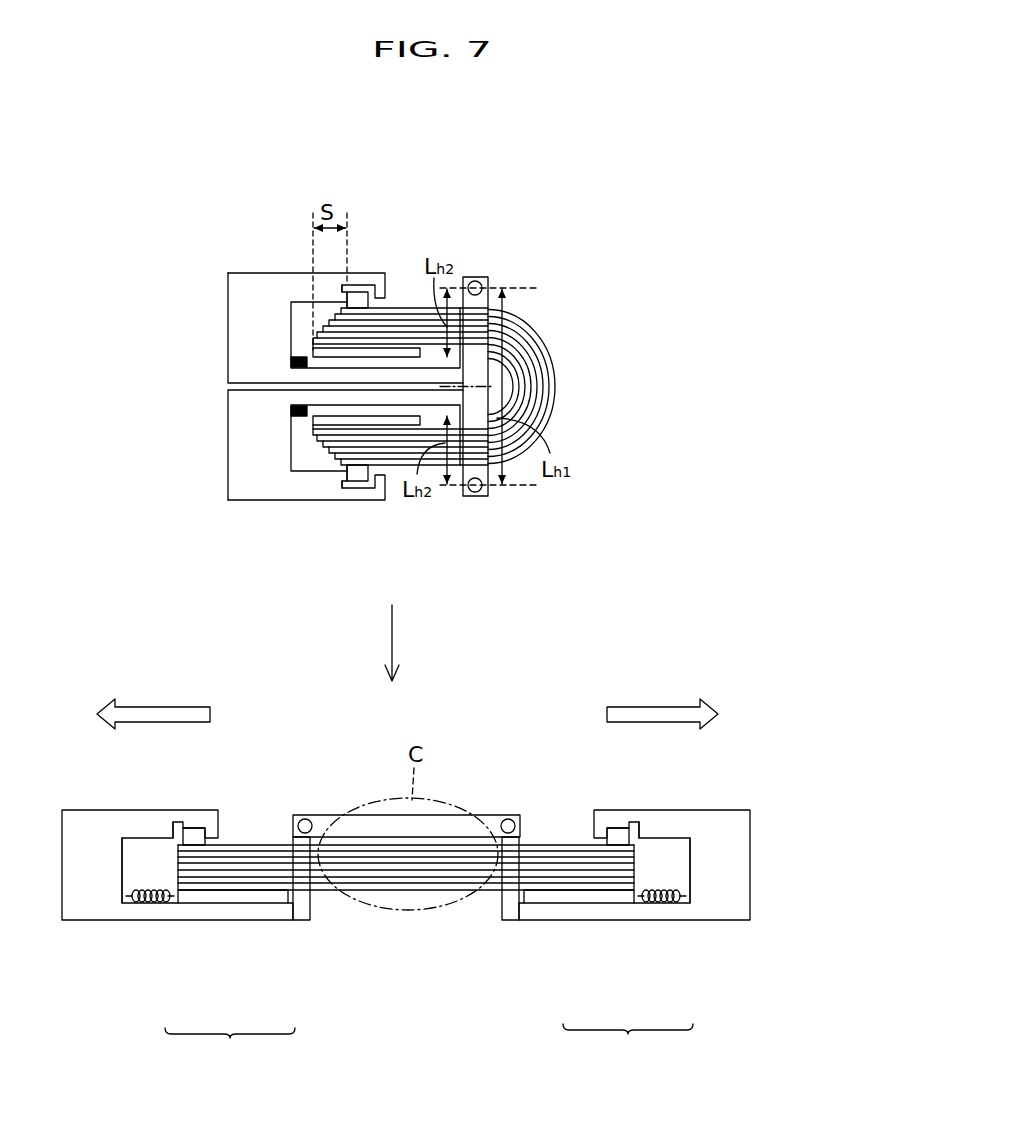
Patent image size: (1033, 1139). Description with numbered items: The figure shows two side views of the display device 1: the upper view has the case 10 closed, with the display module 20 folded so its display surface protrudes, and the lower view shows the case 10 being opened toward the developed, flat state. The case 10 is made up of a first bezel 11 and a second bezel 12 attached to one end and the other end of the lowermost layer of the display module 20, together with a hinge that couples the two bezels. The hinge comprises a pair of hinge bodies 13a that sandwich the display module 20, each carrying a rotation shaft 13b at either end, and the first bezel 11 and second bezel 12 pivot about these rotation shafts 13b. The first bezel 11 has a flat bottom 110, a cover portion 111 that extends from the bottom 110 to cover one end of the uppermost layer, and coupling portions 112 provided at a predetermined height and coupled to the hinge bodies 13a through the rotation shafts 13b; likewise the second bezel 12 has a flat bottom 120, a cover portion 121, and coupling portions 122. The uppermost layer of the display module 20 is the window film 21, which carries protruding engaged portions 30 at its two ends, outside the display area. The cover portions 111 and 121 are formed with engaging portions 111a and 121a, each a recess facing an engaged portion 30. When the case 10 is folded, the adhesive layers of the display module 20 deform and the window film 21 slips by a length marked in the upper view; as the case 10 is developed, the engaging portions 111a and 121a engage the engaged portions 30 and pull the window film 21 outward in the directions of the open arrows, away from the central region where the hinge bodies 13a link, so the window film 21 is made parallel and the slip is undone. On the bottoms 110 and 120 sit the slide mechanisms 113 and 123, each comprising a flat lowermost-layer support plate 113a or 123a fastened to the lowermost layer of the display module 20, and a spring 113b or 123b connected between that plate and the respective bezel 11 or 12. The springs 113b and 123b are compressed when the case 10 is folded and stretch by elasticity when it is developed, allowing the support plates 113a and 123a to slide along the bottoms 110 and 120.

The display device 1 is at (634, 280).
The case 10 is at (741, 953).
The first bezel 11 is at (214, 447).
The second bezel 12 is at (214, 321).
The hinge body 13a is at (478, 446).
The rotation shaft 13b is at (475, 281).
The display module 20 is at (557, 342).
The window film 21 is at (403, 307).
The engaged portion 30 is at (356, 300).
The bottom 110 is at (627, 905).
The cover portion 111 is at (228, 492).
The engaging portion 111a is at (345, 487).
The coupling portion 112 is at (470, 460).
The slide mechanism 113 is at (320, 412).
The lowermost-layer support plate 113a is at (577, 908).
The spring 113b is at (663, 908).
The bottom 120 is at (160, 902).
The cover portion 121 is at (228, 281).
The engaging portion 121a is at (343, 288).
The coupling portion 122 is at (480, 330).
The slide mechanism 123 is at (320, 353).
The lowermost-layer support plate 123a is at (225, 912).
The spring 123b is at (167, 908).